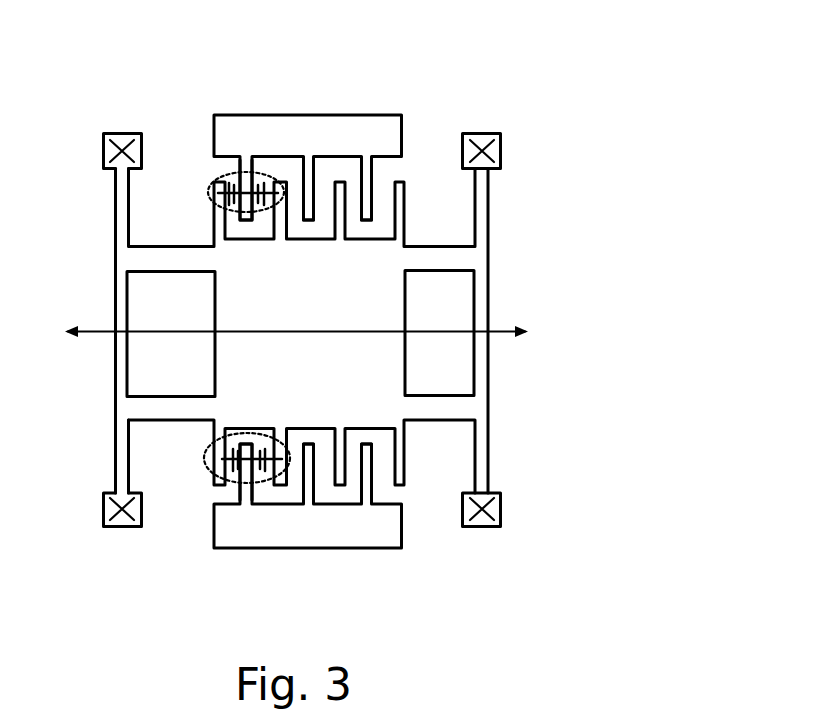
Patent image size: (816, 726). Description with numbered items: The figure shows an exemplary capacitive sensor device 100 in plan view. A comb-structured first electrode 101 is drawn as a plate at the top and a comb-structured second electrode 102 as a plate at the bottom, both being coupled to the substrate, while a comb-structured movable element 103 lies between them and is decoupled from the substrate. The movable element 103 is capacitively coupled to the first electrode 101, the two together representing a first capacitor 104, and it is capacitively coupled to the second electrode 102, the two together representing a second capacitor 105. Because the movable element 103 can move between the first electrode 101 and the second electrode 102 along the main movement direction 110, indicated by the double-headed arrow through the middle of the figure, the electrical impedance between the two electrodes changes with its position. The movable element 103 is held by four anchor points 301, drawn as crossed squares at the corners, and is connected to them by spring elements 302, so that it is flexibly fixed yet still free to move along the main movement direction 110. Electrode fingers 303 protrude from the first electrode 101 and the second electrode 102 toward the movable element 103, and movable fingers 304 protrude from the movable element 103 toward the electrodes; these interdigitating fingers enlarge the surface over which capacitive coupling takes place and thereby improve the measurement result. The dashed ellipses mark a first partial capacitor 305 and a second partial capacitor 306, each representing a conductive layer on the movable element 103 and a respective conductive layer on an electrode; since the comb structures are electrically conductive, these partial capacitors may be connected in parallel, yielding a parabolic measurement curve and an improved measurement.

The capacitive sensor device 100 is at (446, 86).
The first electrode 101 is at (262, 114).
The second electrode 102 is at (383, 544).
The movable element 103 is at (387, 352).
The first capacitor 104 is at (235, 212).
The second capacitor 105 is at (129, 482).
The main movement direction 110 is at (505, 330).
The anchor points 301 is at (115, 133).
The spring elements 302 is at (118, 221).
The electrode fingers 303 is at (240, 171).
The movable fingers 304 is at (213, 229).
The first partial capacitor 305 is at (240, 178).
The second partial capacitor 306 is at (263, 178).